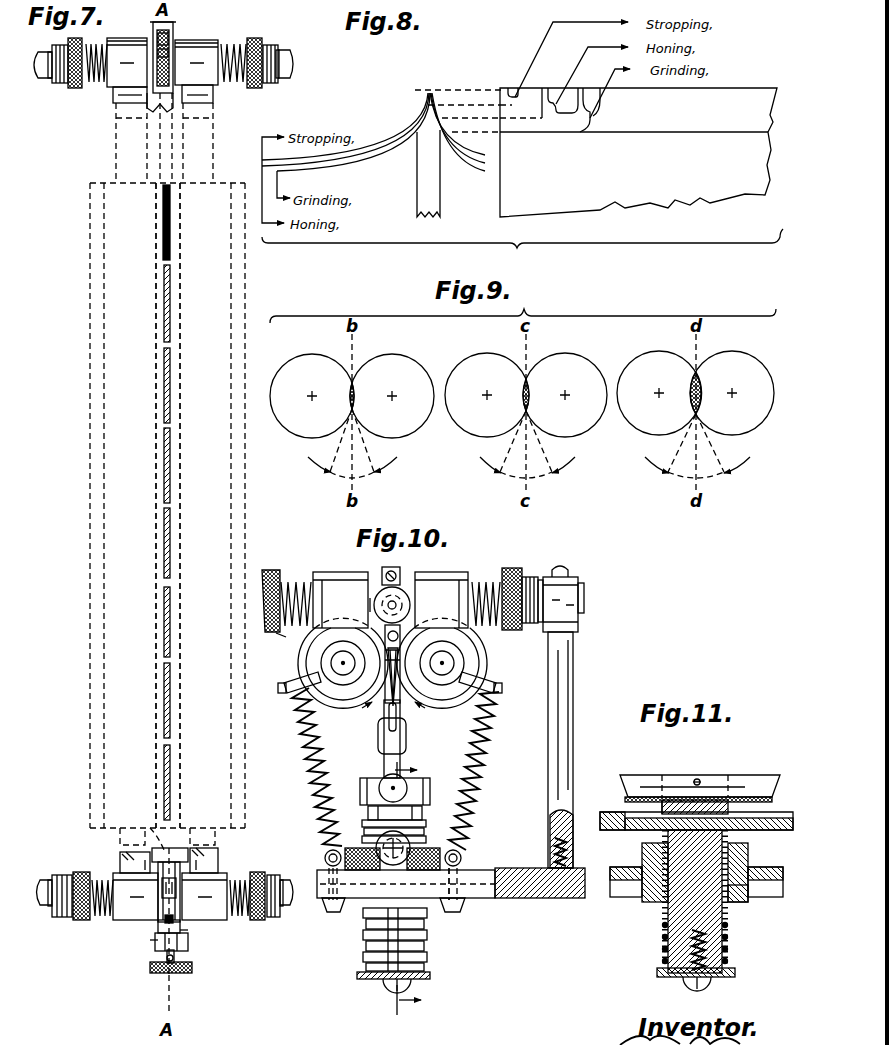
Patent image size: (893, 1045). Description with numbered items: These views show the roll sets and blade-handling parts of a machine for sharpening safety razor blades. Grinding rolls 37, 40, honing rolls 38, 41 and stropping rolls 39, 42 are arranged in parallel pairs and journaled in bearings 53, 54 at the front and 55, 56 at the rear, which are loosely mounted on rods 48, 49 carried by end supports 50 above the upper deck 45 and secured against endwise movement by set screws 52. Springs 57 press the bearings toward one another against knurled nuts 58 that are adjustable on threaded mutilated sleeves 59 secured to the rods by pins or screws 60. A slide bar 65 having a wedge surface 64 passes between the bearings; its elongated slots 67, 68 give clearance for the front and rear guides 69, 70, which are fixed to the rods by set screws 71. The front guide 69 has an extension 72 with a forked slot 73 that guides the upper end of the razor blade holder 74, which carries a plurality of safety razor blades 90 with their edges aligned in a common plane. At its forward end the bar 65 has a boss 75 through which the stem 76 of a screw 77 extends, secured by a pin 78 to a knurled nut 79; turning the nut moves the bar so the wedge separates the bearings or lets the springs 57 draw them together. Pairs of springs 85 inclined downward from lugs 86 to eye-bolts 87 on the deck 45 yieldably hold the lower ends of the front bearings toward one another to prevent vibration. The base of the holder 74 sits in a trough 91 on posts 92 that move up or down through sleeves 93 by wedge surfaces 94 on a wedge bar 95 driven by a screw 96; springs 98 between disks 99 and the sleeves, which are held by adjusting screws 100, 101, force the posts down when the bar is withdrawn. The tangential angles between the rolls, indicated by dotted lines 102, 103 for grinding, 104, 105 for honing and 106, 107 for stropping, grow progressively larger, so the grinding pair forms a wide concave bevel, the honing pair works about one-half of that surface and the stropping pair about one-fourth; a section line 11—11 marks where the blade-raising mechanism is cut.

In FIG. 10, the section line 11 is at (390, 887).
In FIG. 9, the grinding roll 37 is at (308, 357).
In FIG. 7, the honing roll 38 is at (116, 132).
In FIG. 9, the honing roll 38 is at (482, 356).
In FIG. 9, the stropping roll 39 is at (654, 353).
In FIG. 10, the stropping roll 39 is at (300, 675).
In FIG. 9, the grinding roll 40 is at (397, 356).
In FIG. 7, the honing roll 41 is at (213, 104).
In FIG. 9, the honing roll 41 is at (569, 355).
In FIG. 9, the stropping roll 42 is at (735, 353).
In FIG. 10, the stropping roll 42 is at (487, 660).
In FIG. 10, the upper deck 45 is at (520, 868).
In FIG. 11, the upper deck 45 is at (785, 812).
In FIG. 7, the rod 48 is at (42, 880).
In FIG. 10, the rod 48 is at (284, 638).
In FIG. 7, the rod 49 is at (42, 52).
In FIG. 10, the end support 50 is at (578, 585).
In FIG. 10, the set screw 52 is at (566, 568).
In FIG. 7, the bearing 53 is at (128, 920).
In FIG. 10, the bearing 53 is at (330, 572).
In FIG. 7, the bearing 54 is at (218, 878).
In FIG. 10, the bearing 54 is at (456, 572).
In FIG. 7, the bearing 55 is at (120, 38).
In FIG. 7, the bearing 56 is at (212, 40).
In FIG. 7, the spring 57 is at (97, 82).
In FIG. 10, the spring 57 is at (298, 582).
In FIG. 7, the knurled nut 58 is at (75, 88).
In FIG. 10, the knurled nut 58 is at (270, 570).
In FIG. 7, the threaded mutilated sleeve 59 is at (58, 83).
In FIG. 7, the pin or screw 60 is at (40, 80).
In FIG. 10, the pin or screw 60 is at (538, 624).
In FIG. 7, the wedge surface 64 is at (147, 40).
In FIG. 7, the slide bar 65 is at (173, 24).
In FIG. 7, the elongated slot 67 is at (185, 828).
In FIG. 7, the elongated slot 68 is at (170, 37).
In FIG. 7, the front guide 69 is at (177, 892).
In FIG. 10, the front guide 69 is at (400, 571).
In FIG. 7, the rear guide 70 is at (170, 53).
In FIG. 7, the set screw 71 is at (147, 106).
In FIG. 10, the set screw 71 is at (400, 574).
In FIG. 10, the extension 72 is at (402, 655).
In FIG. 10, the forked slot 73 is at (390, 665).
In FIG. 10, the razor blade holder 74 is at (404, 734).
In FIG. 7, the boss 75 is at (166, 958).
In FIG. 10, the boss 75 is at (372, 605).
In FIG. 7, the stem 76 is at (190, 946).
In FIG. 7, the screw 77 is at (157, 935).
In FIG. 7, the pin 78 is at (160, 966).
In FIG. 7, the knurled nut 79 is at (192, 967).
In FIG. 10, the knurled nut 79 is at (410, 605).
In FIG. 10, the spring 85 is at (308, 777).
In FIG. 10, the lug 86 is at (288, 692).
In FIG. 10, the eye-bolt 87 is at (325, 858).
In FIG. 7, the safety razor blade 90 is at (170, 256).
In FIG. 8, the safety razor blade 90 is at (441, 198).
In FIG. 10, the safety razor blade 90 is at (373, 715).
In FIG. 10, the trough 91 is at (410, 780).
In FIG. 11, the trough 91 is at (698, 775).
In FIG. 10, the post 92 is at (360, 790).
In FIG. 11, the post 92 is at (690, 914).
In FIG. 10, the sleeve 93 is at (364, 833).
In FIG. 11, the sleeve 93 is at (662, 840).
In FIG. 11, the wedge surface 94 is at (655, 800).
In FIG. 10, the wedge bar 95 is at (422, 812).
In FIG. 11, the wedge bar 95 is at (640, 815).
In FIG. 10, the screw 96 is at (372, 871).
In FIG. 11, the screw 96 is at (651, 808).
In FIG. 10, the spring 98 is at (424, 946).
In FIG. 11, the spring 98 is at (728, 948).
In FIG. 10, the disk 99 is at (430, 975).
In FIG. 11, the disk 99 is at (735, 973).
In FIG. 10, the adjusting screw 100 is at (330, 906).
In FIG. 11, the adjusting screw 100 is at (748, 853).
In FIG. 10, the adjusting screw 101 is at (450, 911).
In FIG. 11, the adjusting screw 101 is at (745, 900).
In FIG. 9, the dotted line 102 is at (338, 451).
In FIG. 9, the dotted line 103 is at (370, 451).
In FIG. 9, the dotted line 104 is at (508, 451).
In FIG. 9, the dotted line 105 is at (540, 451).
In FIG. 9, the dotted line 106 is at (658, 451).
In FIG. 9, the dotted line 107 is at (727, 451).